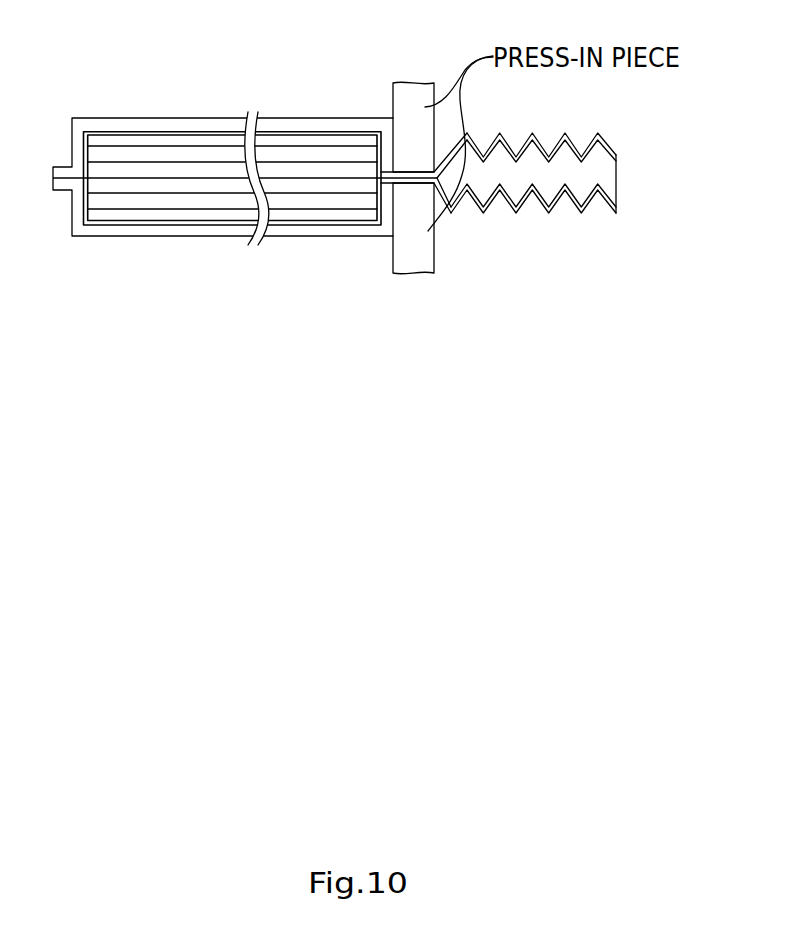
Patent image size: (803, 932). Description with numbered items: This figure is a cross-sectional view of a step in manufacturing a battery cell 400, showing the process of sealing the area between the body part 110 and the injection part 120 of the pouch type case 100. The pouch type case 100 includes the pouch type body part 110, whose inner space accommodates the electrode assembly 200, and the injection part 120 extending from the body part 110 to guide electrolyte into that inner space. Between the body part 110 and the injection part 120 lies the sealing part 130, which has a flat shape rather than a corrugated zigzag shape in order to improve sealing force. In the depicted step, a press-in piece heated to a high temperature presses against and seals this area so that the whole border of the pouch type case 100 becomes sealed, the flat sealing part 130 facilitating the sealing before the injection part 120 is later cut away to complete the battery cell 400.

The battery cell 400 is at (348, 44).
The pouch type case 100 is at (473, 360).
The body part 110 is at (228, 235).
The injection part 120 is at (517, 213).
The sealing part 130 is at (418, 183).
The electrode assembly 200 is at (215, 141).